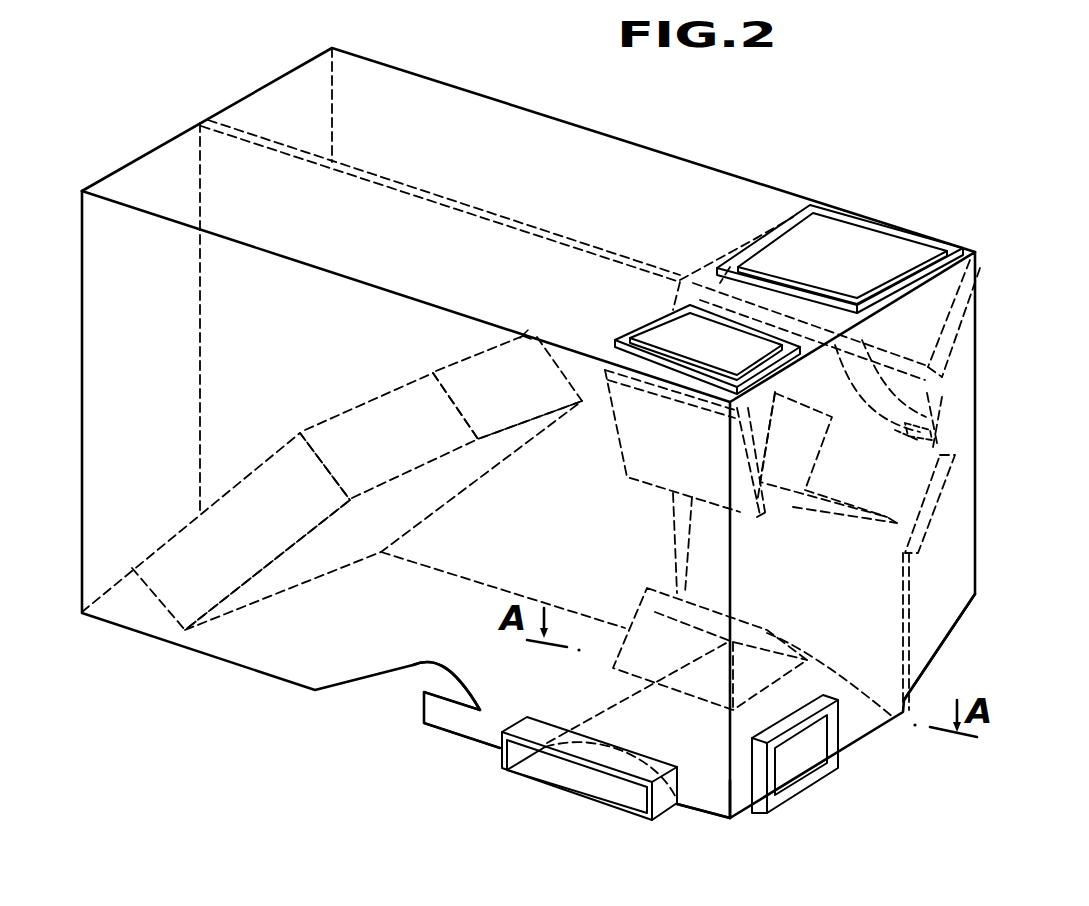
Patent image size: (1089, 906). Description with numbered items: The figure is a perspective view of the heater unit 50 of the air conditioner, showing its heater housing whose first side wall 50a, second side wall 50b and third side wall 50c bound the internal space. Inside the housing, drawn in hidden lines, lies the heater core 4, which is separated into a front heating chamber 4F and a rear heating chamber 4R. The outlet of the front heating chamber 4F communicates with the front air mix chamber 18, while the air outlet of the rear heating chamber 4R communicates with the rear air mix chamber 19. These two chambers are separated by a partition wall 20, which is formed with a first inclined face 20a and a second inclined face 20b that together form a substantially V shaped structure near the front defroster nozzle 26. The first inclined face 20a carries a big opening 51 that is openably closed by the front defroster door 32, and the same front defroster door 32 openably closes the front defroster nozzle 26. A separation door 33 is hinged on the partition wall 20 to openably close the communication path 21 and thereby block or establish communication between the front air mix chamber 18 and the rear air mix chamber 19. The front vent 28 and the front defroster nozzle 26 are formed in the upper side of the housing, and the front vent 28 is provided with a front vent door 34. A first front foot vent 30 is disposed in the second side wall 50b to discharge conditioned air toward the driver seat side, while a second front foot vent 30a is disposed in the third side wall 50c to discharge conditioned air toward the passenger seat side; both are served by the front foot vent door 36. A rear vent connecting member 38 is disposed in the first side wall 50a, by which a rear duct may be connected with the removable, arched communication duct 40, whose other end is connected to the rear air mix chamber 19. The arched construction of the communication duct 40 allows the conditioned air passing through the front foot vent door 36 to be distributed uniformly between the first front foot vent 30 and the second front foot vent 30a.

The heater core 4 is at (193, 526).
The front heating chamber 4F is at (336, 540).
The rear heating chamber 4R is at (489, 472).
The front air mix chamber 18 is at (455, 267).
The rear air mix chamber 19 is at (557, 188).
The partition wall 20 is at (903, 613).
The first inclined face 20a is at (900, 407).
The second inclined face 20b is at (950, 327).
The communication path 21 is at (913, 433).
The front defroster nozzle 26 is at (771, 249).
The front vent 28 is at (665, 328).
The first front foot vent 30 is at (788, 787).
The second front foot vent 30a is at (422, 707).
The front defroster door 32 is at (883, 344).
The separation door 33 is at (937, 512).
The front vent door 34 is at (630, 433).
The front foot vent door 36 is at (733, 618).
The rear vent connecting member 38 is at (583, 793).
The communication duct 40 is at (845, 698).
The heater unit 50 is at (683, 155).
The first side wall 50a is at (703, 800).
The second side wall 50b is at (738, 800).
The third side wall 50c is at (462, 693).
The big opening 51 is at (920, 413).